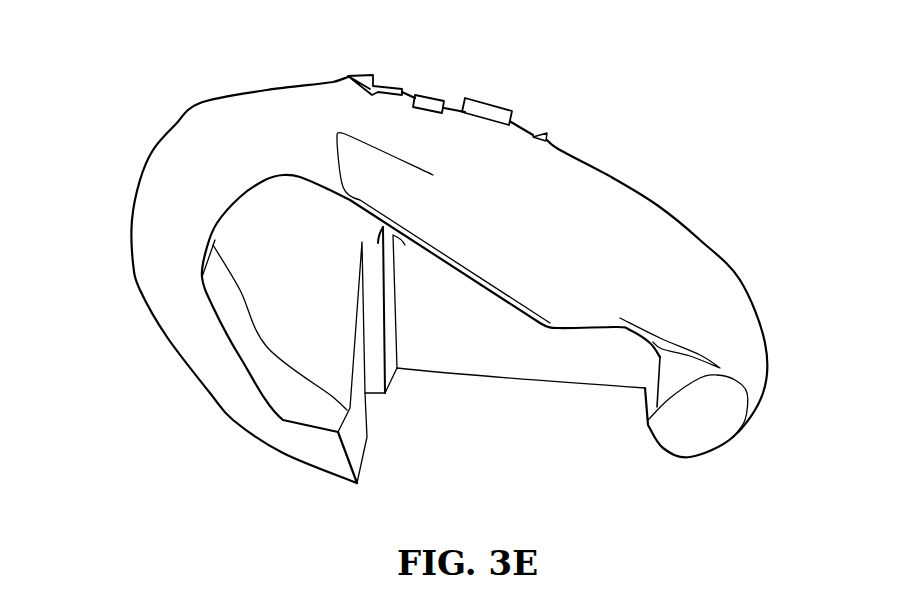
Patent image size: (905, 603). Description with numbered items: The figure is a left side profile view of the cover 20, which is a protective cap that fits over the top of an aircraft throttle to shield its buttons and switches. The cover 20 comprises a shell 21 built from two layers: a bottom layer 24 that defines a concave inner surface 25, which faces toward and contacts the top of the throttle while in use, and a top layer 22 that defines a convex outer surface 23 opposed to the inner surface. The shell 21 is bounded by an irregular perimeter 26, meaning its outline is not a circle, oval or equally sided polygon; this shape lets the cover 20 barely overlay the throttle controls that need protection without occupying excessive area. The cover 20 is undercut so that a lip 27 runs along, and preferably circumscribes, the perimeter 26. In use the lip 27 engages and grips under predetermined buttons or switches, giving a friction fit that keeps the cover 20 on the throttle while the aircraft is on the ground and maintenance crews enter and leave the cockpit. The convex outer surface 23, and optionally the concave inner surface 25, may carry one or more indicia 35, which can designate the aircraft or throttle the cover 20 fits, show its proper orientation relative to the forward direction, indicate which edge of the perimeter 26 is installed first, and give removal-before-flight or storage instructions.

The cover 20 is at (104, 153).
The shell 21 is at (657, 205).
The top layer 22 is at (200, 122).
The convex outer surface 23 is at (613, 178).
The bottom layer 24 is at (283, 377).
The concave inner surface 25 is at (430, 325).
The irregular perimeter 26 is at (766, 343).
The lip 27 is at (647, 427).
The indicia 35 is at (385, 83).